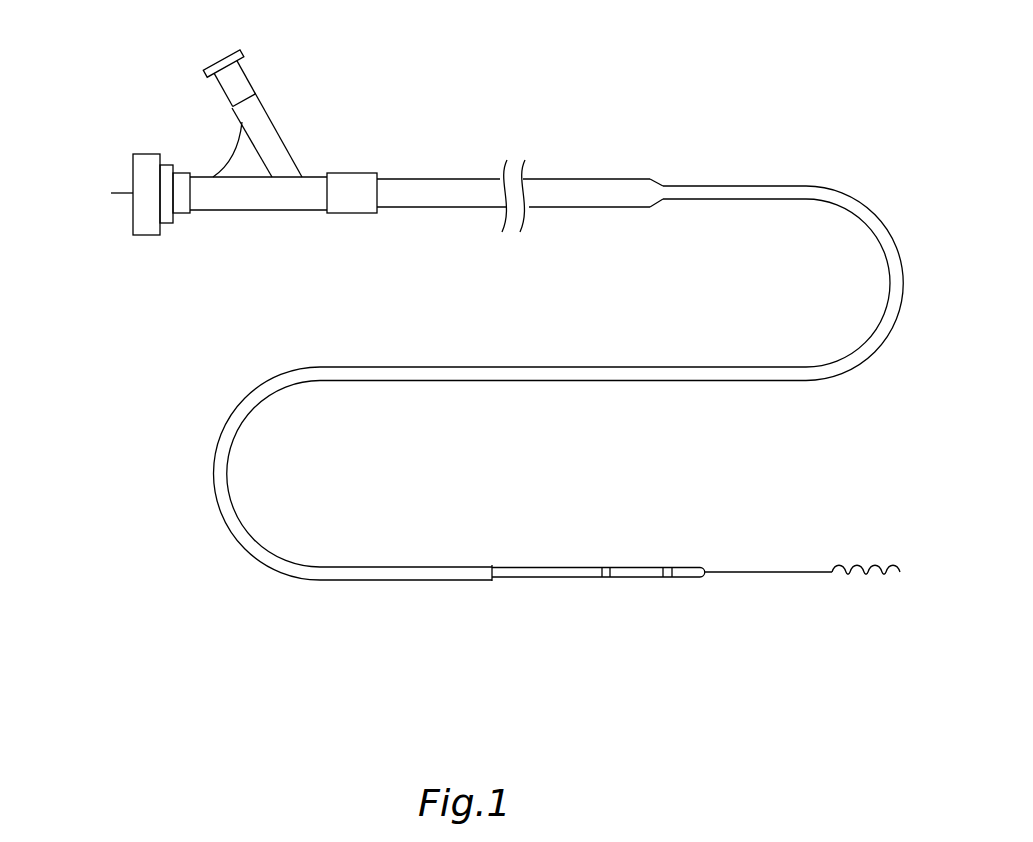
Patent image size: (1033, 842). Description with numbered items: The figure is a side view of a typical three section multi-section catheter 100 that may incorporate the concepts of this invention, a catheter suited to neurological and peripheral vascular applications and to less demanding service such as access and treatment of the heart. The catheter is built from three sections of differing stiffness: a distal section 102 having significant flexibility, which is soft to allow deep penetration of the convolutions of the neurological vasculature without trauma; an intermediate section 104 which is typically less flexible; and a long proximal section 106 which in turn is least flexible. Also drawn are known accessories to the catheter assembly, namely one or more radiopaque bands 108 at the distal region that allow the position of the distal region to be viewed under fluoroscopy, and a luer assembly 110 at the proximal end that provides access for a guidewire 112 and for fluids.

The multi-section catheter 100 is at (760, 67).
The distal section 102 is at (618, 576).
The intermediate section 104 is at (498, 367).
The proximal section 106 is at (652, 132).
The radiopaque bands 108 is at (673, 538).
The luer assembly 110 is at (258, 210).
The guidewire 112 is at (120, 193).